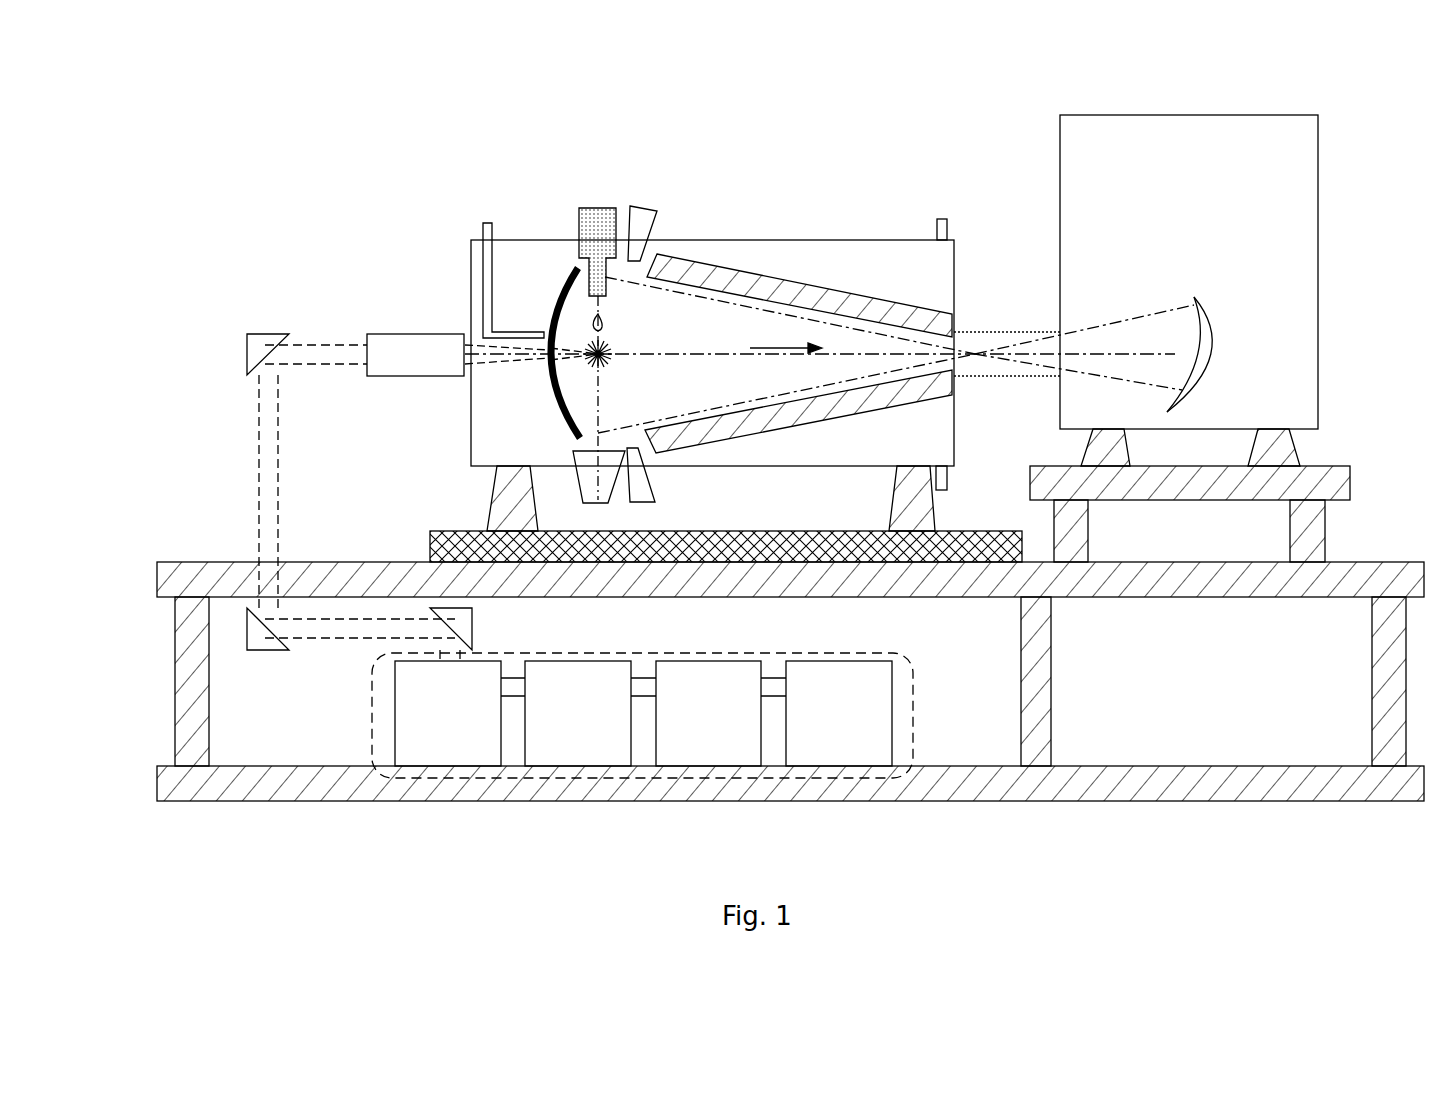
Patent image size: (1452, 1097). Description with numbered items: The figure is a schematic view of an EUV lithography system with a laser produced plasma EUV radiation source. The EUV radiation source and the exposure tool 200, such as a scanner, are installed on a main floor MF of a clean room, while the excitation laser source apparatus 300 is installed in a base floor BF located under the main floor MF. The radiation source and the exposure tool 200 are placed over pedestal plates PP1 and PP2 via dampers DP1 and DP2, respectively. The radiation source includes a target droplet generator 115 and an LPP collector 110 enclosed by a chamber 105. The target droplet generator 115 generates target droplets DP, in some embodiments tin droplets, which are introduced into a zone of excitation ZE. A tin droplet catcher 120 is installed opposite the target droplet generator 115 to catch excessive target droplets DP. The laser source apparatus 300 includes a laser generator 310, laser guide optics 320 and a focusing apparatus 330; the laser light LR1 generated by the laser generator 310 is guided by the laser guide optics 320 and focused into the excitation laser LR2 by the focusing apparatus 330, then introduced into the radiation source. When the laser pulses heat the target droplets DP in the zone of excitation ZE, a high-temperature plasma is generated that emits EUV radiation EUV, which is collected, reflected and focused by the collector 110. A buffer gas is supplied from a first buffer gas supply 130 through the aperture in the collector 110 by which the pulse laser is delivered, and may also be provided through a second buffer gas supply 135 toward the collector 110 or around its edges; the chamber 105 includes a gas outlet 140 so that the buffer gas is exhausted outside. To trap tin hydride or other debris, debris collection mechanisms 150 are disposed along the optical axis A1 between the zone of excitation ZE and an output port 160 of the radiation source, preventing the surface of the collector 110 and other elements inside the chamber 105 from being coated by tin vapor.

The chamber 105 is at (475, 240).
The LPP collector 110 is at (553, 312).
The target droplet generator 115 is at (592, 210).
The tin droplet catcher 120 is at (610, 495).
The first buffer gas supply 130 is at (487, 303).
The second buffer gas supply 135 is at (647, 215).
The gas outlet 140 is at (942, 220).
The debris collection mechanism 150 is at (730, 270).
The output port 160 is at (955, 345).
The exposure tool 200 is at (1288, 135).
The excitation laser source apparatus 300 is at (749, 756).
The laser generator 310 is at (525, 780).
The laser guide optics 320 is at (300, 497).
The focusing apparatus 330 is at (380, 338).
The target droplets DP is at (590, 317).
The EUV radiation EUV is at (788, 347).
The optical axis A1 is at (872, 353).
The laser light LR1 is at (262, 467).
The excitation laser LR2 is at (503, 362).
The zone of excitation ZE is at (597, 363).
The pedestal plate PP1 is at (437, 530).
The pedestal plate PP2 is at (1339, 464).
The damper DP1 is at (895, 490).
The damper DP2 is at (1287, 445).
The main floor MF is at (158, 570).
The base floor BF is at (255, 800).